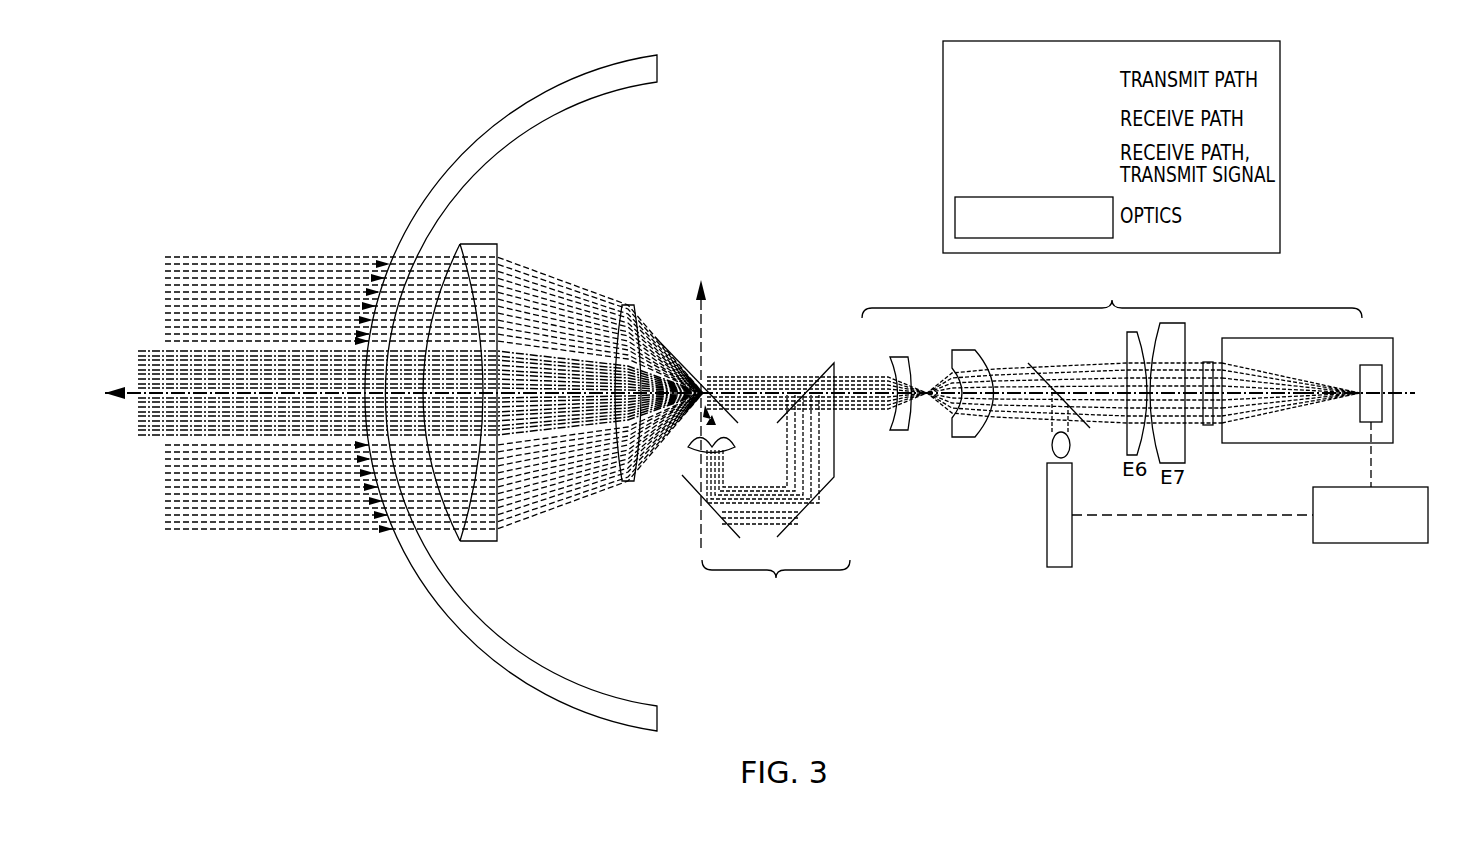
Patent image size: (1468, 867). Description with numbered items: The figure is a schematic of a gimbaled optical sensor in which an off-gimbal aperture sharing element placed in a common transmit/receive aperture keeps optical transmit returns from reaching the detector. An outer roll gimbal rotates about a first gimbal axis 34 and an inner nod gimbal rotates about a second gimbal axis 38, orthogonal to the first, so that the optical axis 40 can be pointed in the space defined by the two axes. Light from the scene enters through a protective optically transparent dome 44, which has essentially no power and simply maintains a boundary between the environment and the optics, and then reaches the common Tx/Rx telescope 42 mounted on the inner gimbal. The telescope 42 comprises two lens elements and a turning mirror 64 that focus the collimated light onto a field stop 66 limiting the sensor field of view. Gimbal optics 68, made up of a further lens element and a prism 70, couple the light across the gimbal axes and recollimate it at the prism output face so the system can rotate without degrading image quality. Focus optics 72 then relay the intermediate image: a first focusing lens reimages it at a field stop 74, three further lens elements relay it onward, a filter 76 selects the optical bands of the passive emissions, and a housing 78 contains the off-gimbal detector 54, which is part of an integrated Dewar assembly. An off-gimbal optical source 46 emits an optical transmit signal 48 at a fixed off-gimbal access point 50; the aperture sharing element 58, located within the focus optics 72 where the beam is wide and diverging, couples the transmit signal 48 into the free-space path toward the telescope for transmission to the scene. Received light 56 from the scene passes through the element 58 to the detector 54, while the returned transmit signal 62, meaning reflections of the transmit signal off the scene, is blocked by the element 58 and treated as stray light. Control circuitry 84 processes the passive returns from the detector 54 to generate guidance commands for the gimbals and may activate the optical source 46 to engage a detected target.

The first gimbal axis 34 is at (699, 520).
The second gimbal axis 38 is at (1405, 393).
The optical axis 40 is at (120, 390).
The common Tx/Rx telescope 42 is at (715, 232).
The protective optically transparent dome 44 is at (537, 99).
The off-gimbal optical source 46 is at (1047, 530).
The optical transmit signal 48 is at (152, 352).
The off-gimbal access point 50 is at (1052, 445).
The off-gimbal detector 54 is at (1380, 365).
The light 56 is at (280, 256).
The aperture sharing element 58 is at (1040, 372).
The returned transmit signal 62 is at (270, 532).
The turning mirror 64 is at (662, 343).
The field stop 66 is at (700, 440).
The gimbal optics 68 is at (776, 584).
The prism 70 is at (836, 478).
The focus optics 72 is at (1112, 296).
The field stop 74 is at (927, 398).
The filter 76 is at (1208, 428).
The detector housing 78 is at (1305, 443).
The control circuitry 84 is at (1372, 543).